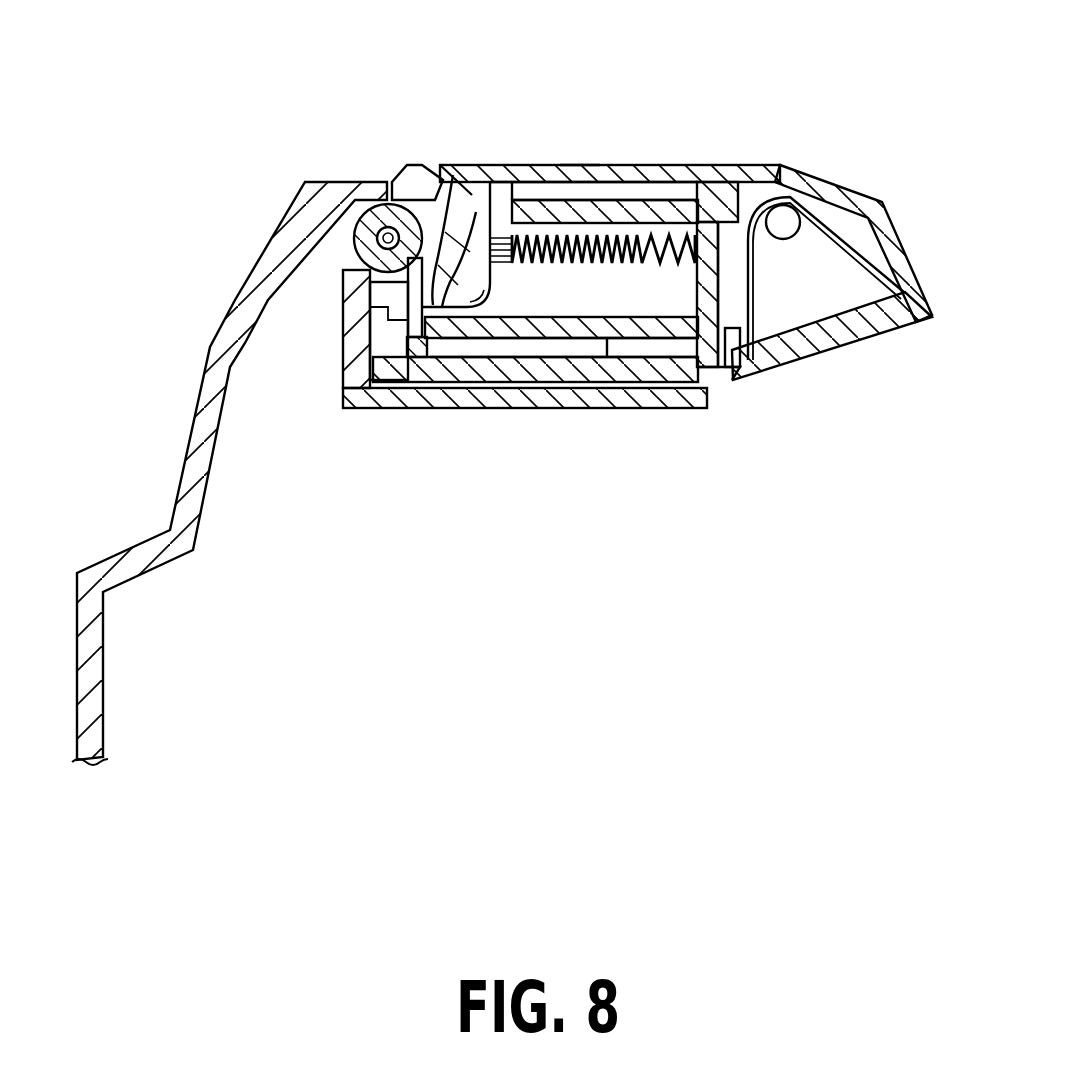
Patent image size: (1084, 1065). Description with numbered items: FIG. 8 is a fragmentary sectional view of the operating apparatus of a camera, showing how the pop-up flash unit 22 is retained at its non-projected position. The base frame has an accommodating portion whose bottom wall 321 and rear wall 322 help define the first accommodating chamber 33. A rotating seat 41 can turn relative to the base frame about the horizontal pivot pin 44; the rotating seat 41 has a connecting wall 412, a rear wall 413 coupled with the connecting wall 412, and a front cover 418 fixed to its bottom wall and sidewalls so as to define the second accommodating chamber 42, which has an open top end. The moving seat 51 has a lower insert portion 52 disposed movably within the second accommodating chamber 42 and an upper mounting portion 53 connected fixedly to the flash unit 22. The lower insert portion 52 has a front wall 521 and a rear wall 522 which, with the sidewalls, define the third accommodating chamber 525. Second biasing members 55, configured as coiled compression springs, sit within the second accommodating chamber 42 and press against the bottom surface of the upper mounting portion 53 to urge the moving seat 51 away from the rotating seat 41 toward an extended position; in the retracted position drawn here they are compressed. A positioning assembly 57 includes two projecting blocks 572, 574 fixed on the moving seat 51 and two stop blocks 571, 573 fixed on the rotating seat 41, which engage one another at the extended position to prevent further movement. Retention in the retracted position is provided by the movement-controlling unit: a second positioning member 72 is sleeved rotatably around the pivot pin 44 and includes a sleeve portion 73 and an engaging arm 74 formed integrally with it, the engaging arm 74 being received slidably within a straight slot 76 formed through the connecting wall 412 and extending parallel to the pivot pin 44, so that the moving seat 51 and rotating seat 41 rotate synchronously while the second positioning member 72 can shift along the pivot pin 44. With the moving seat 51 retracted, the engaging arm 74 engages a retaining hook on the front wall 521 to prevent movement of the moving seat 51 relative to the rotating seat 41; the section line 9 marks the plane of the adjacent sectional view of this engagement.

The section line 9 is at (353, 272).
The flash unit 22 is at (858, 345).
The first accommodating chamber 33 is at (353, 360).
The rotating seat 41 is at (592, 163).
The second accommodating chamber 42 is at (608, 190).
The horizontal pivot pin 44 is at (365, 210).
The moving seat 51 is at (706, 155).
The lower insert portion 52 is at (657, 232).
The upper mounting portion 53 is at (823, 183).
The second biasing member 55 is at (705, 365).
The positioning assembly 57 is at (540, 165).
The second positioning member 72 is at (305, 182).
The sleeve portion 73 is at (390, 200).
The engaging arm 74 is at (368, 387).
The straight slot 76 is at (422, 225).
The bottom wall 321 is at (570, 410).
The rear wall 322 is at (353, 310).
The connecting wall 412 is at (479, 220).
The rear wall 413 is at (575, 163).
The front cover 418 is at (618, 385).
The front wall 521 is at (523, 330).
The rear wall 522 is at (636, 198).
The third accommodating chamber 525 is at (735, 185).
The stop block 571 is at (715, 198).
The projecting block 572 is at (512, 190).
The stop block 573 is at (630, 346).
The projecting block 574 is at (397, 380).